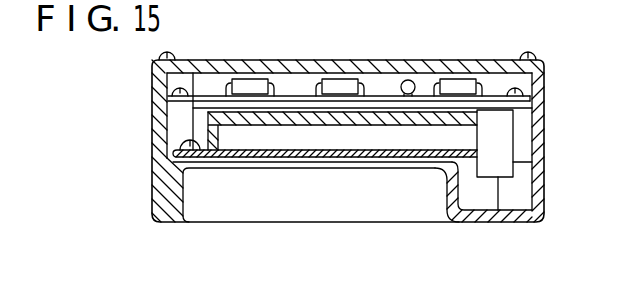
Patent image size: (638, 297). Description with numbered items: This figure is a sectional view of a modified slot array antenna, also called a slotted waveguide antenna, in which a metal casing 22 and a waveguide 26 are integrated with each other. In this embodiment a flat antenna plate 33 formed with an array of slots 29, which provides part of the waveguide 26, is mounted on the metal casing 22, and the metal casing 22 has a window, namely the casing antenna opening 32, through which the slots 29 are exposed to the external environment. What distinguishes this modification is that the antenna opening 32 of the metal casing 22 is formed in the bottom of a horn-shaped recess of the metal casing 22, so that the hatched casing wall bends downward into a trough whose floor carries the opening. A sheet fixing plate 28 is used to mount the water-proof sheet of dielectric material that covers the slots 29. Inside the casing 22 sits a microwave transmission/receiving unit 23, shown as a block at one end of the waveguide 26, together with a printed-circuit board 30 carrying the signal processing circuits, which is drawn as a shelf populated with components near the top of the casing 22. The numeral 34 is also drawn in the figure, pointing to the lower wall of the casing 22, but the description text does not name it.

The metal casing 22 is at (533, 98).
The microwave transmission/receiving unit 23 is at (513, 162).
The waveguide 26 is at (207, 117).
The sheet fixing plate 28 is at (347, 158).
The slots 29 is at (420, 162).
The printed-circuit board 30 is at (382, 101).
The casing antenna opening 32 is at (248, 168).
The flat antenna plate 33 is at (178, 155).
The lower housing 34 is at (177, 207).